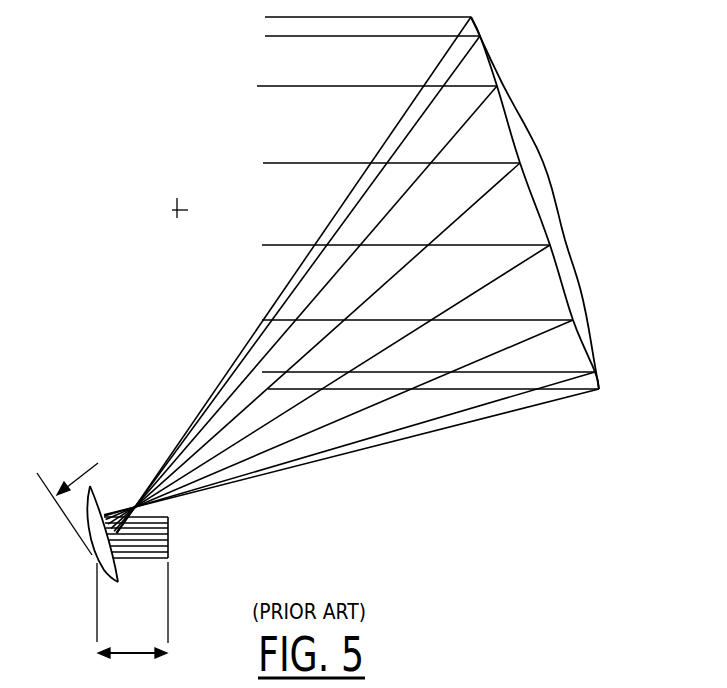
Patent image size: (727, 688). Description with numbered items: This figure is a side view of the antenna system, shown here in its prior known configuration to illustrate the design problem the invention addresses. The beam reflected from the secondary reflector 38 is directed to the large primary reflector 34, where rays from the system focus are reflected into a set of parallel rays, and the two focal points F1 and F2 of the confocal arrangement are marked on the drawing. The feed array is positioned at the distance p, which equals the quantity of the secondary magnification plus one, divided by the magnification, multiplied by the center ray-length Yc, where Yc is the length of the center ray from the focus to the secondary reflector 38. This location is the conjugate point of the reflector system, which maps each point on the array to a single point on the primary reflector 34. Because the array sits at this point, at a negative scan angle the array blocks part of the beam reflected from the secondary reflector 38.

The primary reflector 34 is at (543, 165).
The secondary reflector 38 is at (93, 550).
The array position p is at (132, 623).
The first focal point F1 is at (135, 507).
The center ray-length Yc is at (67, 496).
The second focal point F2 is at (177, 210).